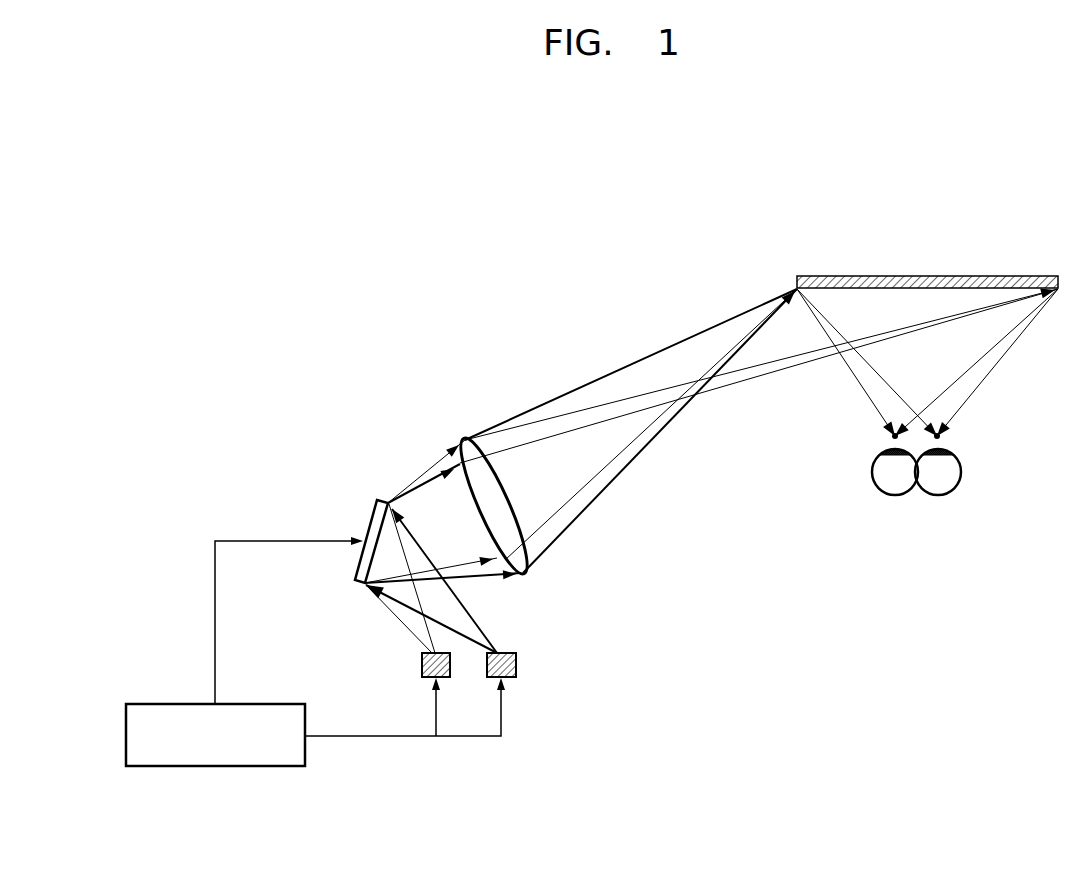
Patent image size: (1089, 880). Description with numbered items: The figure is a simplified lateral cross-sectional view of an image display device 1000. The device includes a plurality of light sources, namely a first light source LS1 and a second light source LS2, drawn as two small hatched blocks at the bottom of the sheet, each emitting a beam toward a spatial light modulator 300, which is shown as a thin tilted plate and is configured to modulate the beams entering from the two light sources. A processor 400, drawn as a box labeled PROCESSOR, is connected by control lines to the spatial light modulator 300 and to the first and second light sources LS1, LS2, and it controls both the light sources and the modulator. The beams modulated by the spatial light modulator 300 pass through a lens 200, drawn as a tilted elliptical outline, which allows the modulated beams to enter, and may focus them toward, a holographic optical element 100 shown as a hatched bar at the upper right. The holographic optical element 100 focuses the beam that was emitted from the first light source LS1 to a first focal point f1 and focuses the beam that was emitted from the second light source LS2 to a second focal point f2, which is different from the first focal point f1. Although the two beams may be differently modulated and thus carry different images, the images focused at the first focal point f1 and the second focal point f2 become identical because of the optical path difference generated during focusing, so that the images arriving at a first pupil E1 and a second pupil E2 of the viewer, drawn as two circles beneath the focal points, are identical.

The image display device 1000 is at (322, 312).
The holographic optical element 100 is at (982, 275).
The lens 200 is at (497, 482).
The spatial light modulator 300 is at (373, 518).
The processor 400 is at (160, 703).
The first light source LS1 is at (450, 653).
The second light source LS2 is at (516, 665).
The first focal point f1 is at (891, 437).
The second focal point f2 is at (941, 437).
The first pupil E1 is at (893, 495).
The second pupil E2 is at (940, 495).